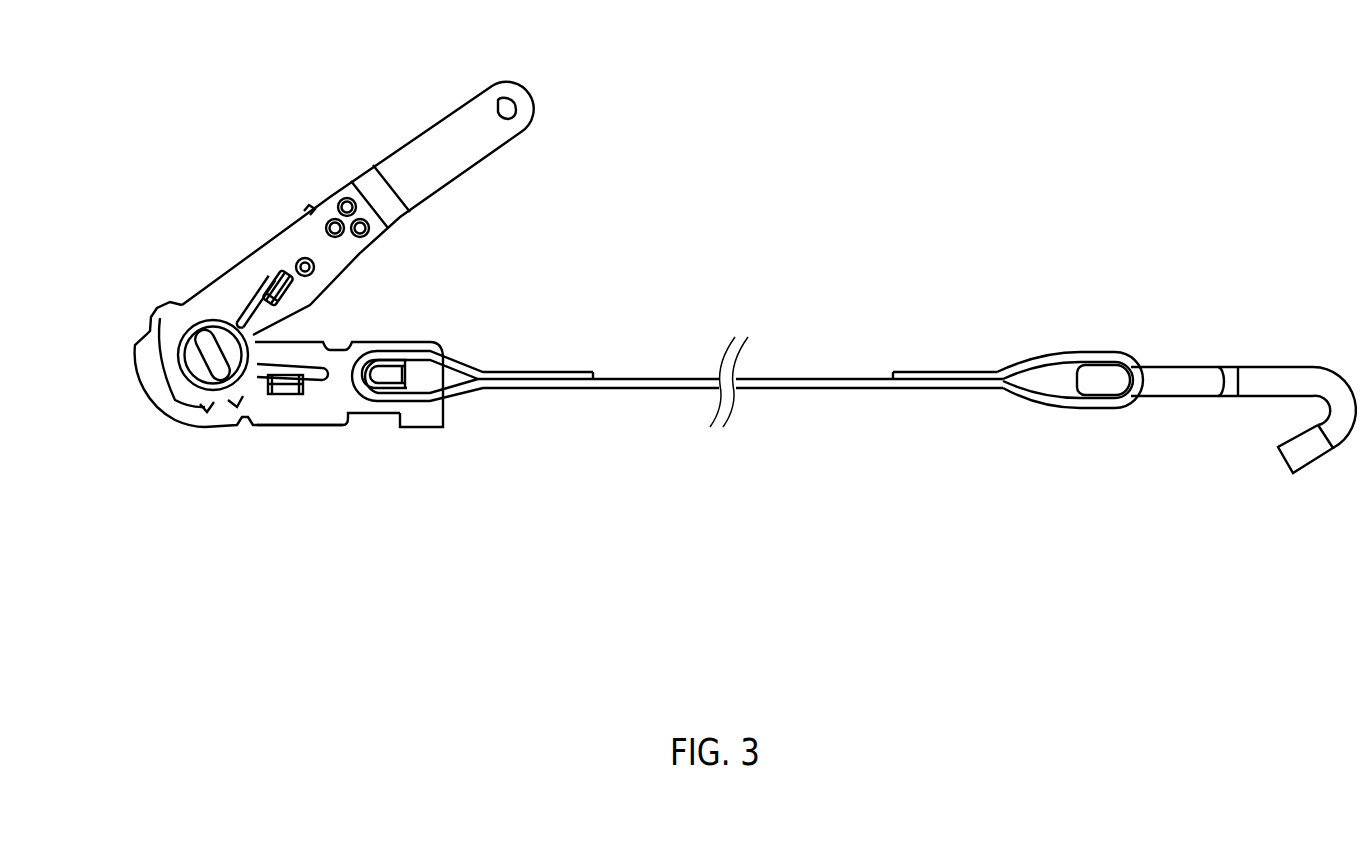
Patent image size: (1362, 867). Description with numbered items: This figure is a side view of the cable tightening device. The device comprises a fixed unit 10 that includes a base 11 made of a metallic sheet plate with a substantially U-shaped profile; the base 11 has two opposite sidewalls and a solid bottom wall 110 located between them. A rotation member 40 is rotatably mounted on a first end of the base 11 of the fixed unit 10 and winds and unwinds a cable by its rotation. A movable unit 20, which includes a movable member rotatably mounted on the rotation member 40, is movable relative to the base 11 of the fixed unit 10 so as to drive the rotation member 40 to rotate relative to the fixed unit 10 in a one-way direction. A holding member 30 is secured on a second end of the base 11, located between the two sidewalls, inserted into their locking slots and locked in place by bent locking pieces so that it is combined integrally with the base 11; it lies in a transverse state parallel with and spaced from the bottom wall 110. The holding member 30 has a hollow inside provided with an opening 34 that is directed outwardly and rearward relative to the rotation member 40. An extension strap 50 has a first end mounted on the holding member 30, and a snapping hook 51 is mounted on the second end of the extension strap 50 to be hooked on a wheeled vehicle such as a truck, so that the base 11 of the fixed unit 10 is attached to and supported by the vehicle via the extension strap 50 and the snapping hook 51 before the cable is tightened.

The fixed unit 10 is at (430, 336).
The base 11 is at (308, 413).
The movable unit 20 is at (335, 180).
The holding member 30 is at (388, 396).
The opening 34 is at (410, 374).
The rotation member 40 is at (194, 366).
The extension strap 50 is at (832, 370).
The snapping hook 51 is at (1268, 383).
The bottom wall 110 is at (438, 422).